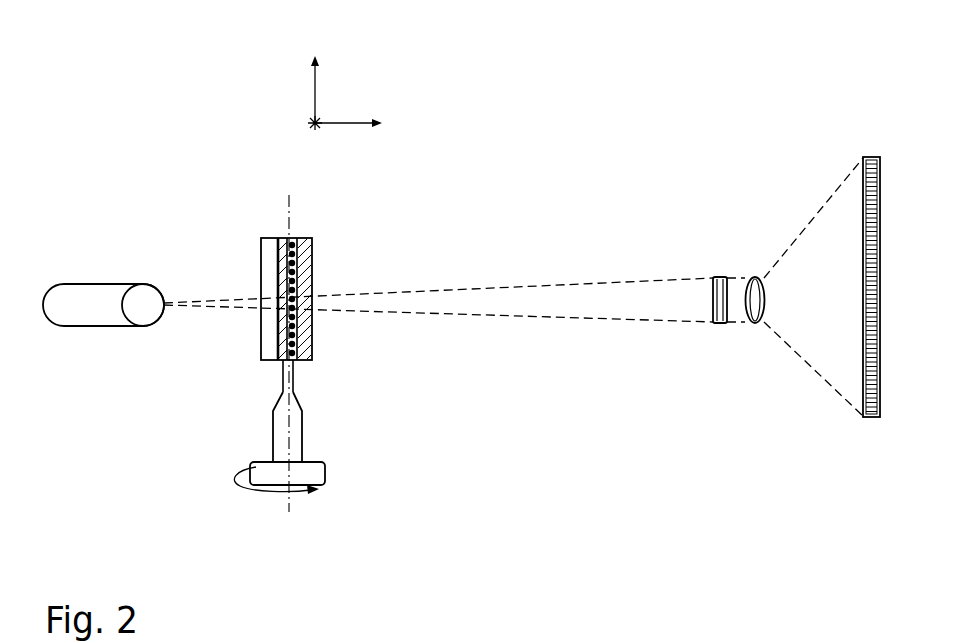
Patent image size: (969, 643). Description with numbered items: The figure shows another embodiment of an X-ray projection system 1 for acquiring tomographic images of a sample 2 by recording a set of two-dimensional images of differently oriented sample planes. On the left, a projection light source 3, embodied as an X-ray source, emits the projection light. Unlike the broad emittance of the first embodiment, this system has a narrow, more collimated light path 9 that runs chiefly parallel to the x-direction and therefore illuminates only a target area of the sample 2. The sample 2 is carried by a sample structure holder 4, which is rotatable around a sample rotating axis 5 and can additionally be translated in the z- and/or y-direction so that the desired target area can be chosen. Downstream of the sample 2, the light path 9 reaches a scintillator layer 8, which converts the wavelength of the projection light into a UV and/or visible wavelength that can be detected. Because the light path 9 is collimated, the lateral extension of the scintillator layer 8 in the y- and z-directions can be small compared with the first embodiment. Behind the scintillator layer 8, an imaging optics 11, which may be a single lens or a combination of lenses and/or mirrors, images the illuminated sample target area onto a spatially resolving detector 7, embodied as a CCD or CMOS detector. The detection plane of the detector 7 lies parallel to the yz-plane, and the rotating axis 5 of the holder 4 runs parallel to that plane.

The projection system 1 is at (499, 110).
The sample 2 is at (298, 360).
The projection light source 3 is at (95, 313).
The sample structure holder 4 is at (267, 478).
The sample rotating axis 5 is at (288, 420).
The spatially resolving detector 7 is at (871, 417).
The scintillator layer 8 is at (717, 323).
The light path 9 is at (597, 318).
The imaging optics 11 is at (754, 323).